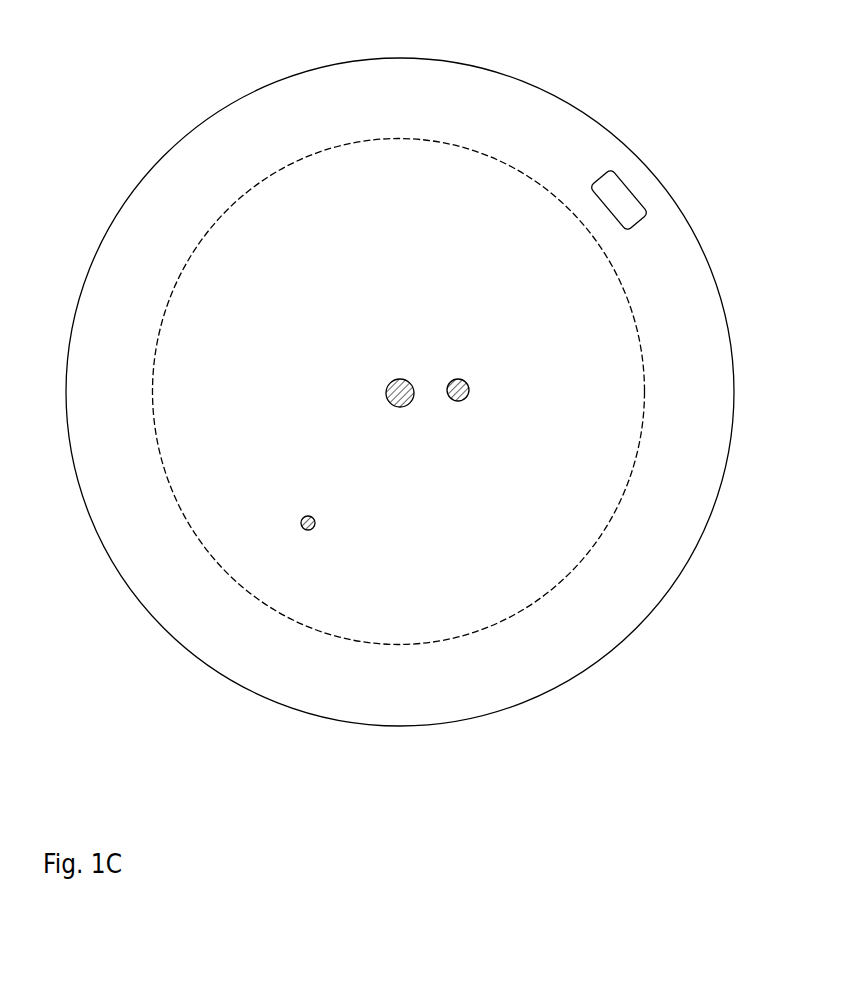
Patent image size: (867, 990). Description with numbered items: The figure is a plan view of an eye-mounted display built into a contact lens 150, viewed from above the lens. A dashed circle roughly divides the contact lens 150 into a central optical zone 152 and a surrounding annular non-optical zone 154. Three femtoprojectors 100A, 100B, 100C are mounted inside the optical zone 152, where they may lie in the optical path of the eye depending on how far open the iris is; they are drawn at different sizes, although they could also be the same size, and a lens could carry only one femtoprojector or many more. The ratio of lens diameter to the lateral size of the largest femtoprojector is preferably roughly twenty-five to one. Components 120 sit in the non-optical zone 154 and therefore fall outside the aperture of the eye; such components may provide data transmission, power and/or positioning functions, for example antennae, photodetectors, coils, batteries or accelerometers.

The contact lens 150 is at (510, 73).
The non-optical zone 154 is at (437, 122).
The optical zone 152 is at (457, 189).
The components 120 is at (627, 182).
The femtoprojector 100A is at (393, 381).
The femtoprojector 100B is at (463, 379).
The femtoprojector 100C is at (313, 516).